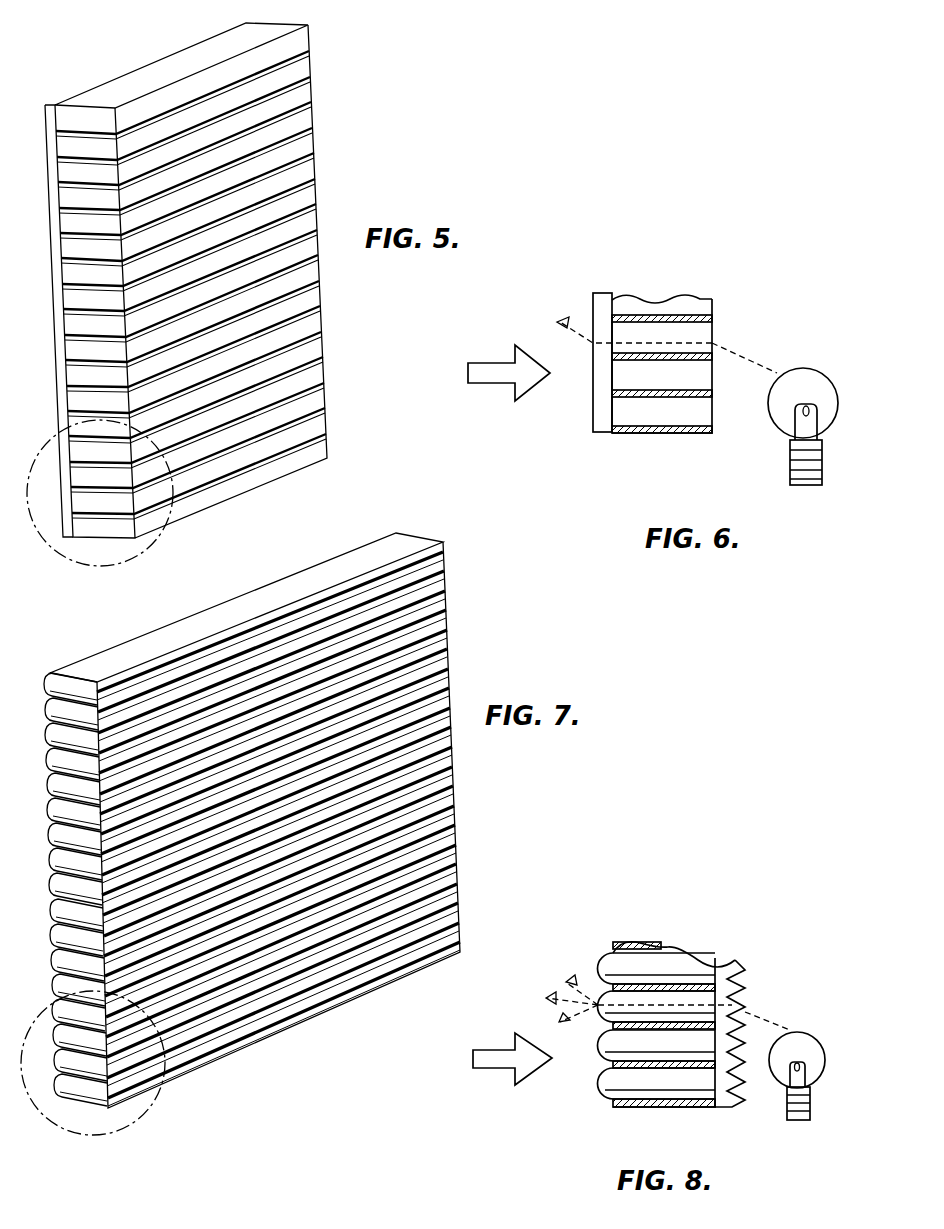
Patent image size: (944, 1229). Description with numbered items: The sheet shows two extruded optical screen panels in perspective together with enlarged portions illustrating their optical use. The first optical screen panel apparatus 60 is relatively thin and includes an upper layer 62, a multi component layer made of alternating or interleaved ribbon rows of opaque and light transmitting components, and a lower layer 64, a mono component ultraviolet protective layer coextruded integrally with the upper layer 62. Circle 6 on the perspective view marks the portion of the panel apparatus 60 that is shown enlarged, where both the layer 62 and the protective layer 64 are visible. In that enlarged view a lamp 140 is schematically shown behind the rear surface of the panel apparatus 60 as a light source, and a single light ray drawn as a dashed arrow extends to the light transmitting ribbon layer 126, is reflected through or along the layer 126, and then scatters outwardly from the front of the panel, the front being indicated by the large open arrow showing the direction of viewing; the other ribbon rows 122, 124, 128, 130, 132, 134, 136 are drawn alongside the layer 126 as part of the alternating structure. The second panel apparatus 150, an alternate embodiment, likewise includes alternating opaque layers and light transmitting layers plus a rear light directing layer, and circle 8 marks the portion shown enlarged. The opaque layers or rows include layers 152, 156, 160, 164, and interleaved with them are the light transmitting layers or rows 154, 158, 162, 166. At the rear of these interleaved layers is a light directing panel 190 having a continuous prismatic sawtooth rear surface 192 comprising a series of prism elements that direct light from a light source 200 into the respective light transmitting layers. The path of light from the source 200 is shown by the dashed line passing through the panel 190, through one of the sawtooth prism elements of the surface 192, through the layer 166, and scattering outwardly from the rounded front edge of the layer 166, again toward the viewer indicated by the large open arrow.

In FIG. 5, the optical screen panel apparatus 60 is at (237, 280).
In FIG. 6, the optical screen panel apparatus 60 is at (663, 356).
In FIG. 5, the upper layer 62 is at (320, 193).
In FIG. 5, the lower layer 64 is at (122, 72).
In FIG. 6, the lower layer 64 is at (602, 423).
In FIG. 5, the circle 6 is at (78, 565).
In FIG. 7, the circle 8 is at (73, 1135).
In FIG. 6, the louver body 122 is at (640, 300).
In FIG. 6, the louver slat 124 is at (613, 318).
In FIG. 6, the light transmitting ribbon layer 126 is at (707, 327).
In FIG. 6, the louver slat 128 is at (708, 355).
In FIG. 6, the channel 130 is at (620, 373).
In FIG. 6, the rear surface 132 is at (713, 392).
In FIG. 6, the channel 134 is at (668, 413).
In FIG. 6, the louver slat 136 is at (642, 433).
In FIG. 6, the lamp 140 is at (800, 370).
In FIG. 7, the optical screen panel apparatus 150 is at (505, 650).
In FIG. 8, the optical screen panel apparatus 150 is at (664, 1013).
In FIG. 8, the opaque layer 152 is at (642, 1110).
In FIG. 8, the light transmitting layer 154 is at (603, 1073).
In FIG. 8, the opaque layer 156 is at (603, 1064).
In FIG. 8, the light transmitting layer 158 is at (598, 1040).
In FIG. 8, the opaque layer 160 is at (740, 1005).
In FIG. 8, the light transmitting layer 162 is at (593, 997).
In FIG. 8, the opaque layer 164 is at (603, 984).
In FIG. 8, the light transmitting layer 166 is at (607, 951).
In FIG. 8, the light directing panel 190 is at (727, 1097).
In FIG. 8, the sawtooth rear surface 192 is at (737, 973).
In FIG. 8, the light source 200 is at (795, 1032).